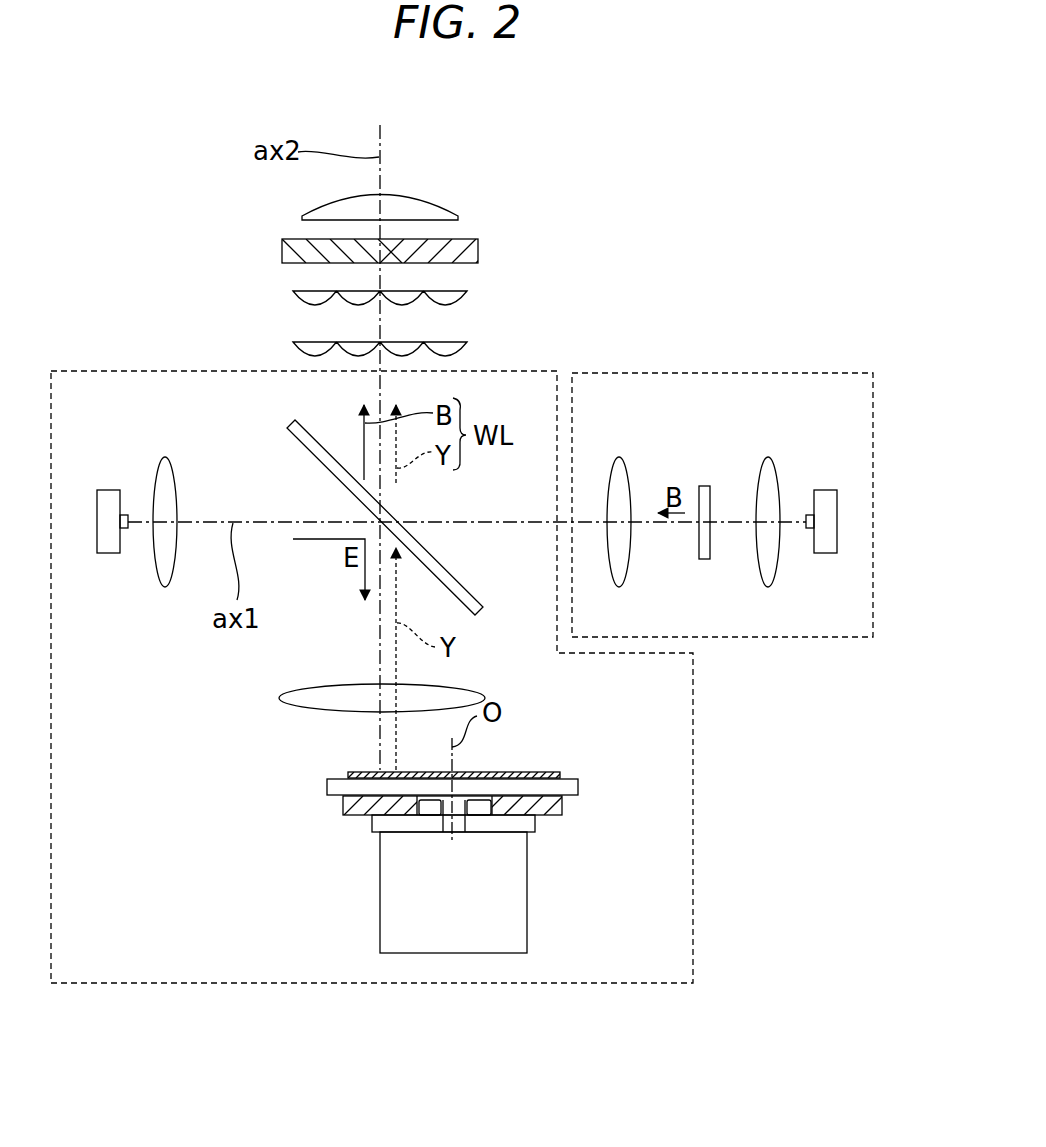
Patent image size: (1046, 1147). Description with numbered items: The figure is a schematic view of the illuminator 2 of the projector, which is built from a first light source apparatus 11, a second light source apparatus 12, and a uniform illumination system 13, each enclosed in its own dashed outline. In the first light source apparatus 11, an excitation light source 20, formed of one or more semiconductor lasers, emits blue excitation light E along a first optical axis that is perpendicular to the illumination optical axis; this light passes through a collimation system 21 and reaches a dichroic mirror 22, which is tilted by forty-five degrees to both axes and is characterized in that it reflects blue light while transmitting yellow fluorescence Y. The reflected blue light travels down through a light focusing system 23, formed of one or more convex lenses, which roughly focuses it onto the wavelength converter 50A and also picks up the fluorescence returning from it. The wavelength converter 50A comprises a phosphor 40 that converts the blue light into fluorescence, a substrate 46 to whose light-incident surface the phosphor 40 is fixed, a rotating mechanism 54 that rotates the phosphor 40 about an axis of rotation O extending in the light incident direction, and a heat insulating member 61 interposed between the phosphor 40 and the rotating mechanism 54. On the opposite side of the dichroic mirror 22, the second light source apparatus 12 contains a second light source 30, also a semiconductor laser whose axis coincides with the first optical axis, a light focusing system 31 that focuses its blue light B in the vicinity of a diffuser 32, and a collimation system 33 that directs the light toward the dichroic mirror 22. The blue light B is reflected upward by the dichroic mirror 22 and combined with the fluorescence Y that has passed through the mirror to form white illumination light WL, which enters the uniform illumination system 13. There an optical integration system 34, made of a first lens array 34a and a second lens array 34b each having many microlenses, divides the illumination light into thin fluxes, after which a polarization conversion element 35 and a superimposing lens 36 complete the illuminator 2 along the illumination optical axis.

The illuminator 2 is at (707, 172).
The first light source apparatus 11 is at (693, 940).
The second light source apparatus 12 is at (825, 637).
The uniform illumination system 13 is at (311, 272).
The excitation light source 20 is at (109, 480).
The collimation system 21 is at (173, 457).
The dichroic mirror 22 is at (467, 587).
The light focusing system 23 is at (288, 705).
The second light source 30 is at (822, 482).
The light focusing system 31 is at (762, 457).
The diffuser 32 is at (703, 486).
The collimation system 33 is at (610, 457).
The optical integration system 34 is at (321, 311).
The first lens array 34a is at (342, 341).
The second lens array 34b is at (293, 300).
The polarization conversion element 35 is at (282, 252).
The superimposing lens 36 is at (302, 214).
The phosphor 40 is at (560, 776).
The substrate 46 is at (578, 787).
The wavelength converter 50A is at (529, 760).
The rotating mechanism 54 is at (540, 897).
The heat insulating member 61 is at (552, 805).